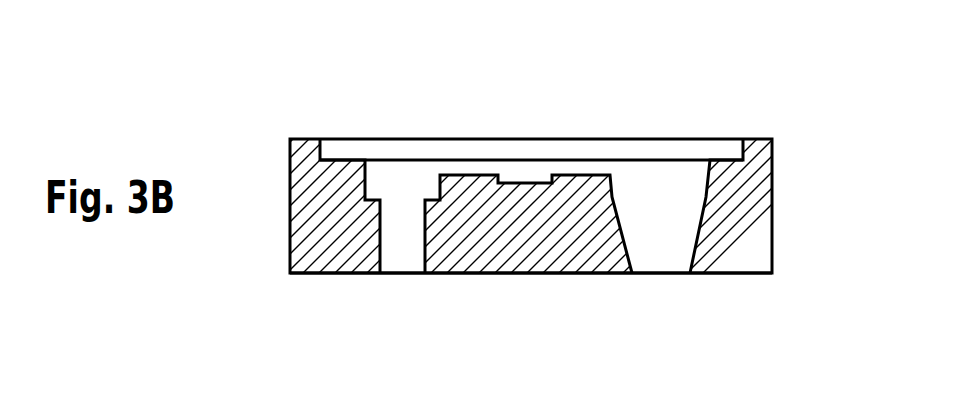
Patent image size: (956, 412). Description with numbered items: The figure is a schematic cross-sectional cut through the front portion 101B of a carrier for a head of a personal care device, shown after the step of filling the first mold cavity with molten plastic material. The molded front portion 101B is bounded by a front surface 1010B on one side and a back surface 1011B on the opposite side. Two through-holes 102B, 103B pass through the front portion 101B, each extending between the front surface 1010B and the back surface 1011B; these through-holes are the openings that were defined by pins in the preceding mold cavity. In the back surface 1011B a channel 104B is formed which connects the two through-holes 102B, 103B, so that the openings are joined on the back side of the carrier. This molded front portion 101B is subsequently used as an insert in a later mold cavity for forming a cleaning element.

The front portion of the carrier 101B is at (773, 208).
The back surface 1011B is at (728, 143).
The front surface 1010B is at (713, 290).
The through-hole 102B is at (402, 158).
The channel 104B is at (528, 158).
The through-hole 103B is at (652, 158).